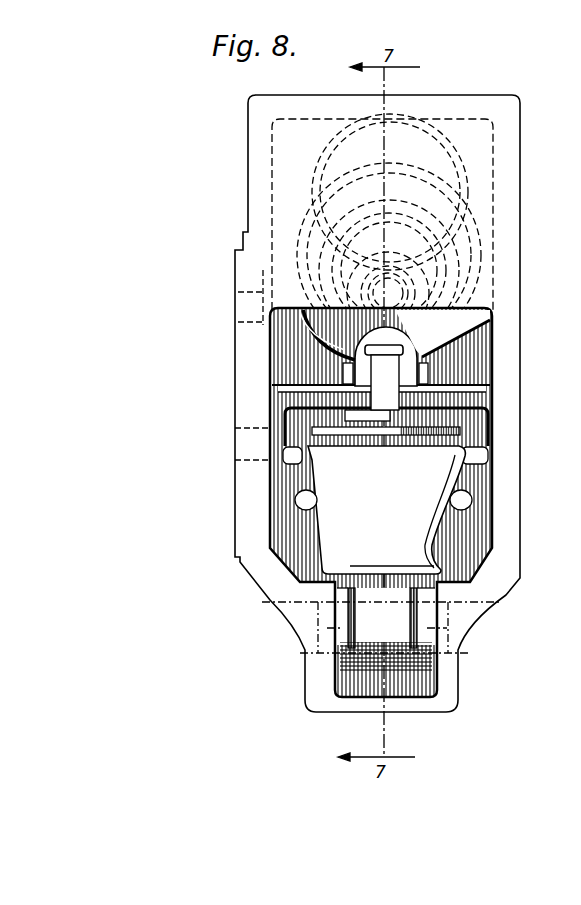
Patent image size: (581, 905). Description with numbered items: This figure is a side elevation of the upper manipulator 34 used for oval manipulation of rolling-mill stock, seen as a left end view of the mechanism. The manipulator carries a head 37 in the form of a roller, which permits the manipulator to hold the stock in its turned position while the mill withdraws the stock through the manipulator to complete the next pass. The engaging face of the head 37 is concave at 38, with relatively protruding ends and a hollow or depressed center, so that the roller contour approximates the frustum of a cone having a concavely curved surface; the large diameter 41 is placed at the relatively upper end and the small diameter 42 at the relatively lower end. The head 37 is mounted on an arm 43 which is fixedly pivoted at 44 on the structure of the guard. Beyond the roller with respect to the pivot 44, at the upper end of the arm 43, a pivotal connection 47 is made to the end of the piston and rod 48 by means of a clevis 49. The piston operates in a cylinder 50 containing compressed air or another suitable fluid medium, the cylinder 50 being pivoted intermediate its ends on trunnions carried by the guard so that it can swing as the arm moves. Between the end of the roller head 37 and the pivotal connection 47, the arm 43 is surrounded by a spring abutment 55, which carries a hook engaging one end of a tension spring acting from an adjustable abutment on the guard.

The upper manipulator 34 is at (248, 222).
The head 37 is at (395, 484).
The concave engaging face 38 is at (326, 508).
The large diameter 41 is at (309, 451).
The small diameter 42 is at (323, 567).
The arm 43 is at (382, 368).
The pivot 44 is at (447, 633).
The pivotal connection 47 is at (428, 372).
The piston and rod 48 is at (365, 328).
The clevis 49 is at (358, 362).
The cylinder 50 is at (418, 145).
The spring abutment 55 is at (322, 432).